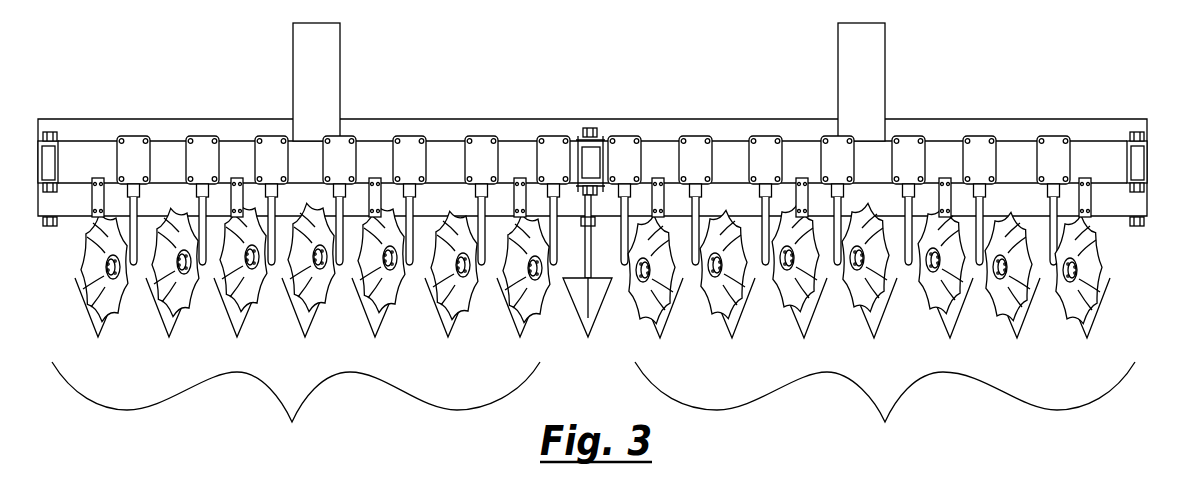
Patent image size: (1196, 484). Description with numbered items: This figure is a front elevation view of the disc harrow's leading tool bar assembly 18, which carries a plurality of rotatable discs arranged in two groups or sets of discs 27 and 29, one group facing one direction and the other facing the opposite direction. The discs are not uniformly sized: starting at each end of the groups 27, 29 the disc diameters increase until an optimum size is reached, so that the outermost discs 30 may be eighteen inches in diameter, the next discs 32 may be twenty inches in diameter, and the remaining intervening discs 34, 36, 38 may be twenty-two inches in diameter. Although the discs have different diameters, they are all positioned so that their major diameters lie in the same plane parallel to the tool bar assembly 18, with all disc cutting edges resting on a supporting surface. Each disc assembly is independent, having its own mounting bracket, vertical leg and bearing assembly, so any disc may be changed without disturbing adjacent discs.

The leading tool bar assembly 18 is at (1017, 134).
The group of discs 27 is at (304, 450).
The group of discs 29 is at (900, 450).
The disc 30 is at (95, 313).
The disc 32 is at (160, 315).
The disc 34 is at (363, 313).
The disc 36 is at (300, 315).
The disc 38 is at (230, 317).